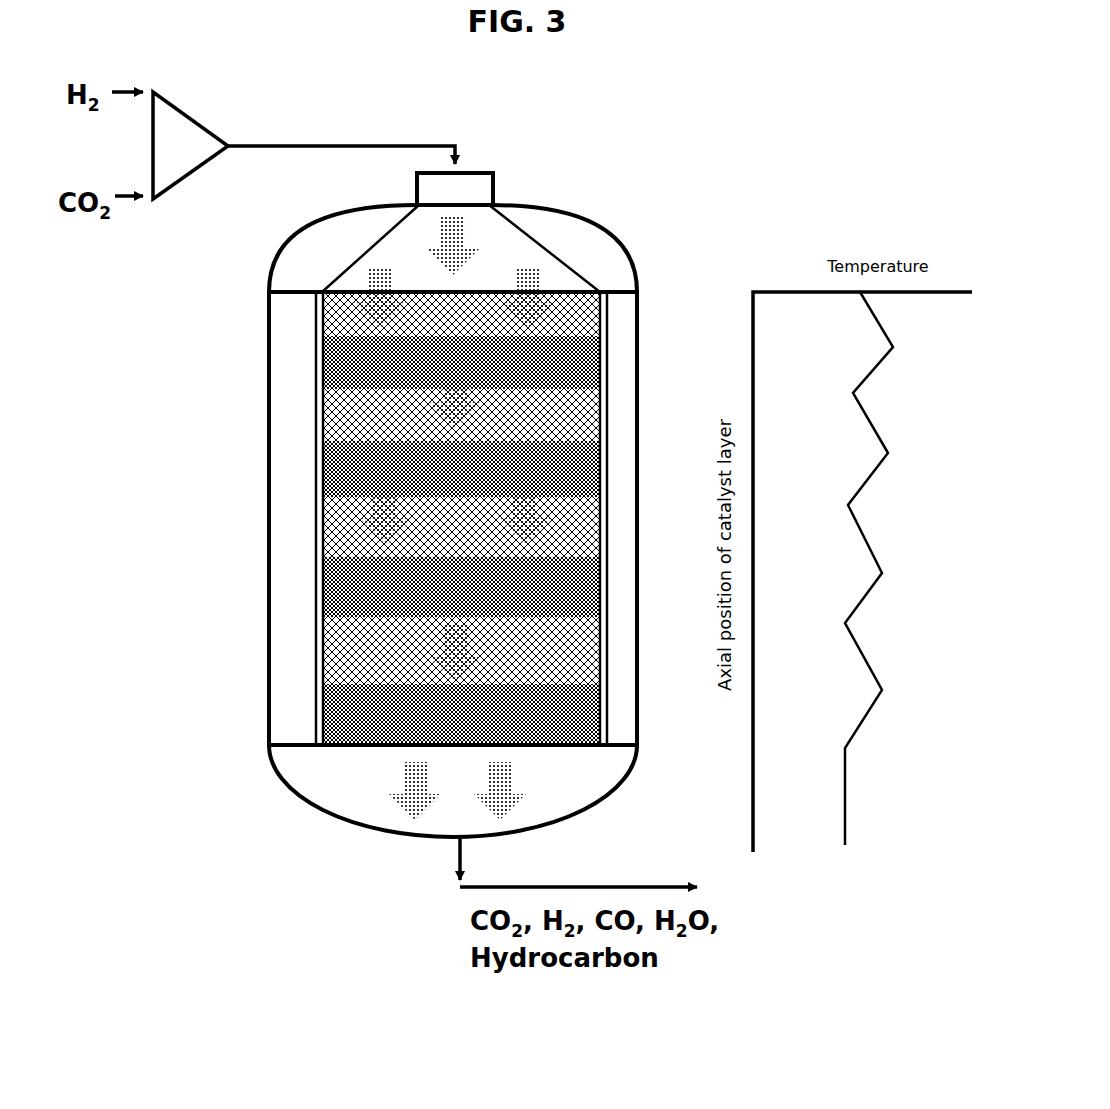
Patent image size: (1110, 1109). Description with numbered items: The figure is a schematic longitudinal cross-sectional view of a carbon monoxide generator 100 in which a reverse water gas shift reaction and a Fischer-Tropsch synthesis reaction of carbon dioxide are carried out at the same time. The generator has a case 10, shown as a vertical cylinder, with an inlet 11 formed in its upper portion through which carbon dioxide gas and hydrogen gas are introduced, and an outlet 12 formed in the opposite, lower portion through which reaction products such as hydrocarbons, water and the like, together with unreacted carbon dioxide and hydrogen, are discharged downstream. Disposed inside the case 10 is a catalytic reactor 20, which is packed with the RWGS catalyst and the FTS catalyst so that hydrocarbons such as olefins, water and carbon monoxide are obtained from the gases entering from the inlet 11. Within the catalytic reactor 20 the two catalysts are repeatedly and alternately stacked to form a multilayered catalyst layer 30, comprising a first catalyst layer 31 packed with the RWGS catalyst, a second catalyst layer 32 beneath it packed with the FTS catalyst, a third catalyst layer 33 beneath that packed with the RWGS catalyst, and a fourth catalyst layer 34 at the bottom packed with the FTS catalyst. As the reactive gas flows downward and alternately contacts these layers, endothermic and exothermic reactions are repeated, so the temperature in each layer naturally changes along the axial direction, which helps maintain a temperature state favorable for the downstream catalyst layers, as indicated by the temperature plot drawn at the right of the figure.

The carbon monoxide generator 100 is at (611, 152).
The case 10 is at (637, 268).
The inlet 11 is at (494, 174).
The outlet 12 is at (456, 838).
The catalytic reactor 20 is at (611, 373).
The multilayered catalyst layer 30 is at (210, 290).
The first catalyst layer 31 is at (314, 330).
The second catalyst layer 32 is at (314, 378).
The third catalyst layer 33 is at (314, 423).
The fourth catalyst layer 34 is at (314, 472).